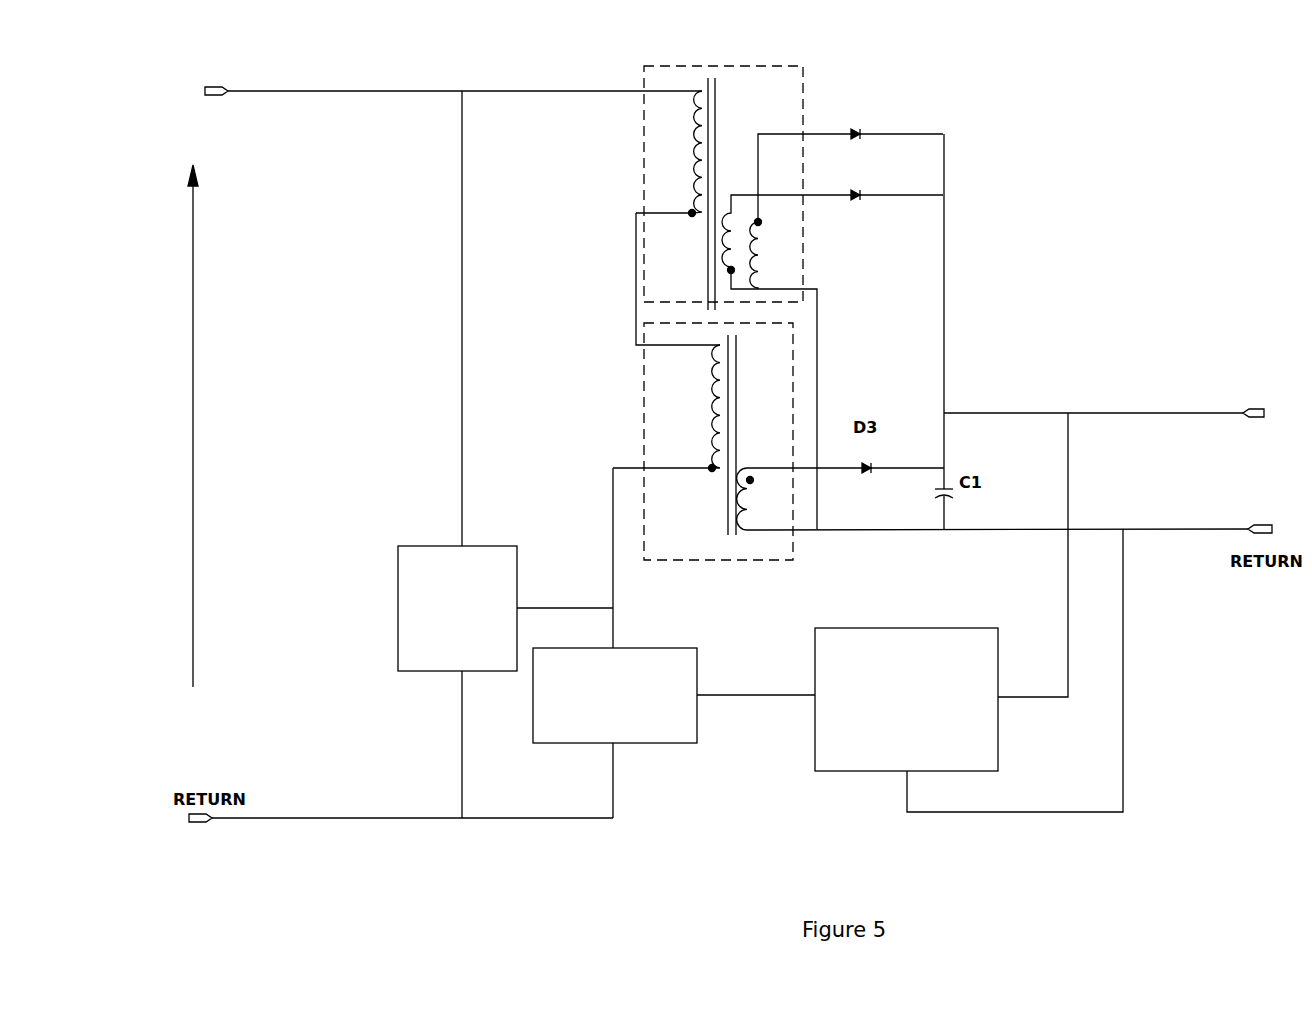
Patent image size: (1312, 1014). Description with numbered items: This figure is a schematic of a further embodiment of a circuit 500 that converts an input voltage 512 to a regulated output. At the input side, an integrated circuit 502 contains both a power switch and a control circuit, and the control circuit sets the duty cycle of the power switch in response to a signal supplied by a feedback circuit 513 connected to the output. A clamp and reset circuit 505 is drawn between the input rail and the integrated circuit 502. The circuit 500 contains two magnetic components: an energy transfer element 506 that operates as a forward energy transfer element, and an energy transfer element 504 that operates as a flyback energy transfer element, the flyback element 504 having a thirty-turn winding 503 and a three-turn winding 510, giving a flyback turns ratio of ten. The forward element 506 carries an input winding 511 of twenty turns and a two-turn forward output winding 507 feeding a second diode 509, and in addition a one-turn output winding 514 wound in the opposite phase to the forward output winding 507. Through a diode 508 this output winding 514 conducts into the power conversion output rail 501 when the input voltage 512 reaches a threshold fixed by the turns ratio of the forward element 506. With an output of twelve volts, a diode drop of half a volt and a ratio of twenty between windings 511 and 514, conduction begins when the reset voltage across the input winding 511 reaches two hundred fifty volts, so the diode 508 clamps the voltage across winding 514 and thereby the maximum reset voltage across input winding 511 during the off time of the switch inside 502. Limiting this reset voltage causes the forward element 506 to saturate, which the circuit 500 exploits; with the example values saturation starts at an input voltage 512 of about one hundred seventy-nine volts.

The circuit 500 is at (452, 75).
The power conversion output rail 501 is at (1198, 404).
The integrated circuit 502 is at (527, 728).
The primary winding 30t 503 is at (717, 428).
The energy transfer element 504 is at (640, 352).
The clamp/reset circuit 505 is at (392, 589).
The forward energy transfer element 506 is at (631, 183).
The forward output winding 507 is at (807, 288).
The diode 508 is at (842, 90).
The rectifier diode D2 509 is at (870, 190).
The secondary winding 3t 510 is at (753, 508).
The input winding 511 is at (643, 106).
The input voltage 512 is at (287, 378).
The feedback circuit 513 is at (808, 743).
The output winding 514 is at (1242, 347).